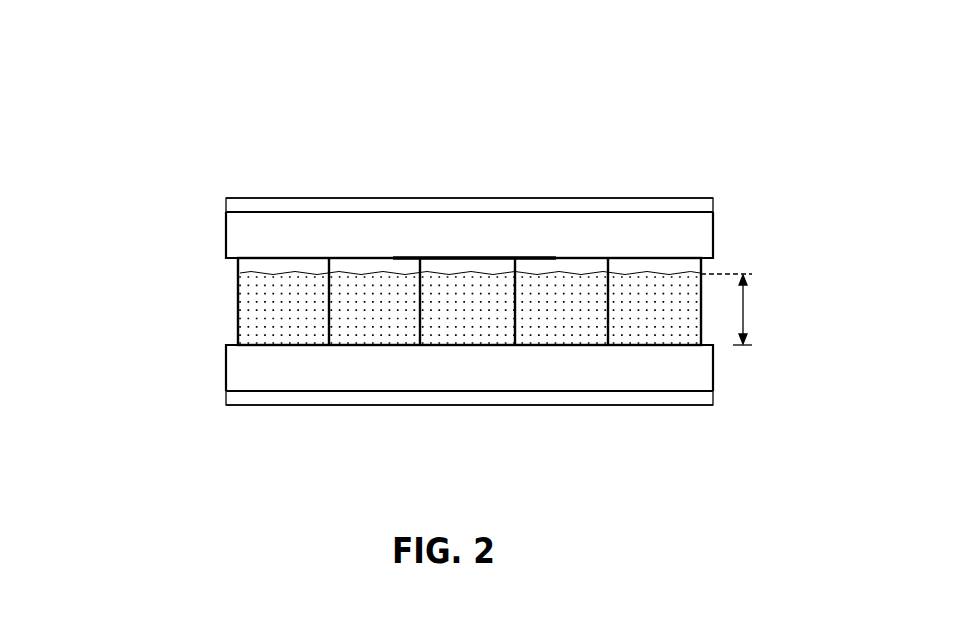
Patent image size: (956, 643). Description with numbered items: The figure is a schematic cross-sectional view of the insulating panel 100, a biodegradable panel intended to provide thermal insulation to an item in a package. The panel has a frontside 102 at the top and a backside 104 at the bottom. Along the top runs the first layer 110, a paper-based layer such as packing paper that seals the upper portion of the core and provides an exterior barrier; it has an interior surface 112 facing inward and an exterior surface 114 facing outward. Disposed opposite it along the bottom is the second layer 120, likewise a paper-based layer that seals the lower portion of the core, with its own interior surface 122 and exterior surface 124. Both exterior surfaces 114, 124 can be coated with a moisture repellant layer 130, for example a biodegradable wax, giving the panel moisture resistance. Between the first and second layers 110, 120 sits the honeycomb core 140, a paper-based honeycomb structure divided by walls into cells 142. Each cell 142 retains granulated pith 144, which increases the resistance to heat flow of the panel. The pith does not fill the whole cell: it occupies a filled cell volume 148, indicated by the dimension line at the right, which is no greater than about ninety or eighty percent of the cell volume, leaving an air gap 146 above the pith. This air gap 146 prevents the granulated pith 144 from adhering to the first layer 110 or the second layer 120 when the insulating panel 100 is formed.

The insulating panel 100 is at (736, 111).
The frontside 102 is at (598, 180).
The backside 104 is at (630, 418).
The first layer 110 is at (687, 232).
The interior surface 112 is at (226, 258).
The exterior surface 114 is at (226, 212).
The second layer 120 is at (687, 366).
The interior surface 122 is at (226, 346).
The exterior surface 124 is at (226, 392).
The moisture repellant layer 130 is at (248, 206).
The honeycomb core 140 is at (390, 298).
The cells 142 is at (555, 256).
The granulated pith 144 is at (565, 302).
The air gap 146 is at (445, 263).
The filled cell volume 148 is at (744, 309).